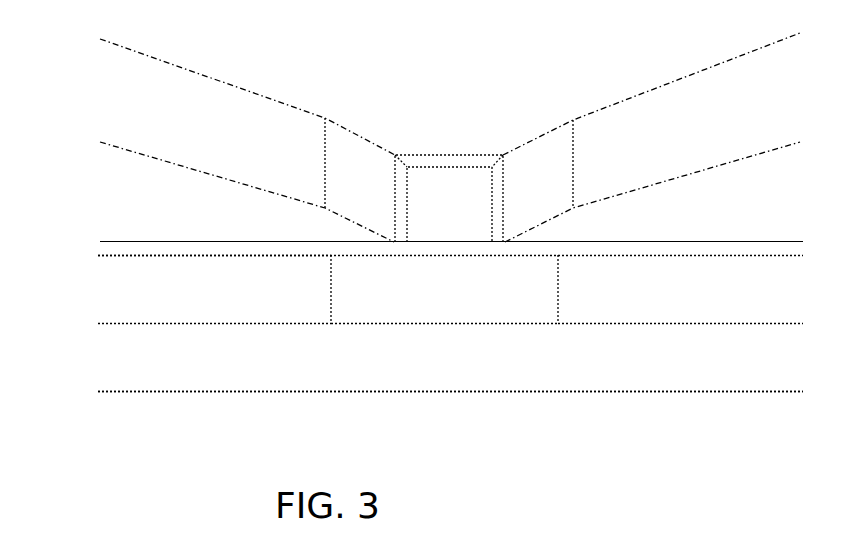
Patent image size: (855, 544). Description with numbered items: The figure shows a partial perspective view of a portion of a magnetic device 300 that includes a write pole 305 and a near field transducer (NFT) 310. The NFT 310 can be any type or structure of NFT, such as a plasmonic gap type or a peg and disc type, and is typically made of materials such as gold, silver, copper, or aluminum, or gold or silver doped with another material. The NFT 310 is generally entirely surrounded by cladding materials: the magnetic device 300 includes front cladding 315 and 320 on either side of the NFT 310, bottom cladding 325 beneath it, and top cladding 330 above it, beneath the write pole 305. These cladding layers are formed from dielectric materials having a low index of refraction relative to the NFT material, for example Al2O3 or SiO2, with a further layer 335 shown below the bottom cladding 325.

The magnetic device 300 is at (231, 419).
The write pole 305 is at (98, 22).
The near field transducer (NFT) 310 is at (444, 289).
The front cladding 315 is at (680, 299).
The front cladding 320 is at (214, 289).
The bottom cladding 325 is at (450, 358).
The top cladding 330 is at (628, 248).
The substrate 335 is at (450, 428).